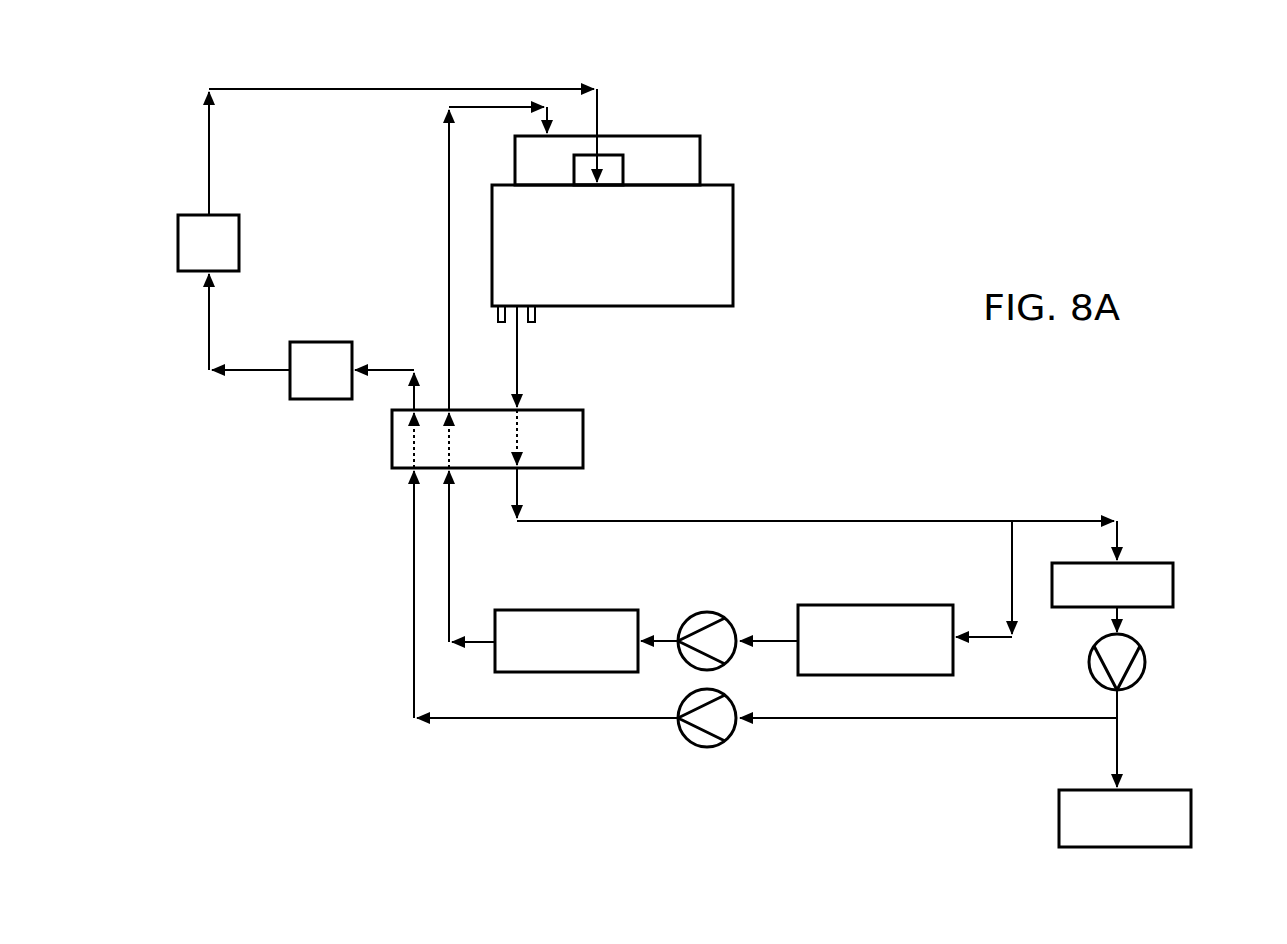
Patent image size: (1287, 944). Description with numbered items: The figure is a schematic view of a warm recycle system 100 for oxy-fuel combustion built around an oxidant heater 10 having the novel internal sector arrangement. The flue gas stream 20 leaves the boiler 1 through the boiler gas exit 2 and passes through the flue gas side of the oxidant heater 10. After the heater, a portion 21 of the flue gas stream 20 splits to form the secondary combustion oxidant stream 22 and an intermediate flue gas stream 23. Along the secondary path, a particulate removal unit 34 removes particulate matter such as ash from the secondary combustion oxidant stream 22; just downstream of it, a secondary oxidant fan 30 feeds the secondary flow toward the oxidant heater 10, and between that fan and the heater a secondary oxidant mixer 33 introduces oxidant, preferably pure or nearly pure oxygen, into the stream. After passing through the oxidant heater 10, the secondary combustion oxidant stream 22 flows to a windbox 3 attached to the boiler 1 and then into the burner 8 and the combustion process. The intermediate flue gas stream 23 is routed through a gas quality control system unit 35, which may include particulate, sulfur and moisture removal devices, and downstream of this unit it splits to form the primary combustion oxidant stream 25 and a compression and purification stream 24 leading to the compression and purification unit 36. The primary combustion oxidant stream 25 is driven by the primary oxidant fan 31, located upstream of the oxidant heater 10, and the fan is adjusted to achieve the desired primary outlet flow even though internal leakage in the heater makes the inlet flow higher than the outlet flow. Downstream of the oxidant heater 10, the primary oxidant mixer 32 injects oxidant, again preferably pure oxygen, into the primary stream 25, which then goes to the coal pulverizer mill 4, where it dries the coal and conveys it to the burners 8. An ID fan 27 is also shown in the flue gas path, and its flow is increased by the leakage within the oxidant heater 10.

The warm recycle system 100 is at (948, 207).
The boiler 1 is at (612, 245).
The boiler gas exit 2 is at (537, 314).
The windbox 3 is at (700, 165).
The burner 8 is at (613, 152).
The coal pulverizer mill 4 is at (208, 243).
The oxidant heater 10 is at (487, 439).
The flue gas stream 20 is at (517, 357).
The portion of the flue gas stream 21 is at (810, 521).
The secondary combustion oxidant stream 22 is at (449, 270).
The intermediate flue gas stream 23 is at (1047, 521).
The compression and purification stream 24 is at (1117, 745).
The primary combustion oxidant stream 25 is at (333, 89).
The ID fan 27 is at (1092, 677).
The secondary oxidant fan 30 is at (713, 612).
The primary oxidant fan 31 is at (713, 750).
The primary oxidant mixer 32 is at (321, 370).
The secondary oxidant mixer 33 is at (566, 641).
The particulate removal unit 34 is at (875, 640).
The gas quality control system unit 35 is at (1112, 585).
The compression and purification unit 36 is at (1125, 818).